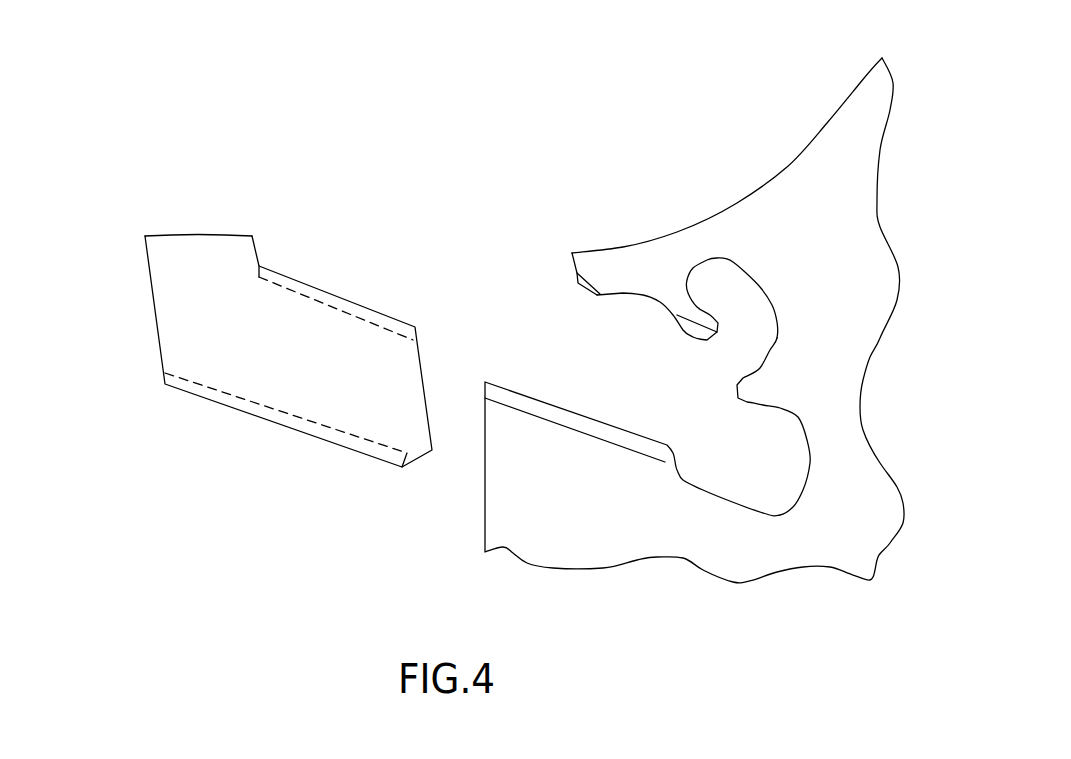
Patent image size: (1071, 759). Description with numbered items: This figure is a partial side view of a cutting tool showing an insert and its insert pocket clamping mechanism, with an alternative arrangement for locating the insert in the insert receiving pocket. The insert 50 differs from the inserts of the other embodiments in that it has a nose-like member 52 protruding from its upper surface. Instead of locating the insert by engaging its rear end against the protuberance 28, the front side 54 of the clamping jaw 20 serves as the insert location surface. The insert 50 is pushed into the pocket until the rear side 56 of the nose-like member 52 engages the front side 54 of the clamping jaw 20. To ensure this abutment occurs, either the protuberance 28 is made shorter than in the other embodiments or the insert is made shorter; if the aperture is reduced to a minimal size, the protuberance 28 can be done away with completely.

The clamping jaw 20 is at (623, 267).
The protuberance 28 is at (757, 390).
The insert 50 is at (127, 288).
The nose-like member 52 is at (218, 243).
The front side of the clamping jaw 54 is at (572, 272).
The rear side of the nose-like member 56 is at (257, 248).